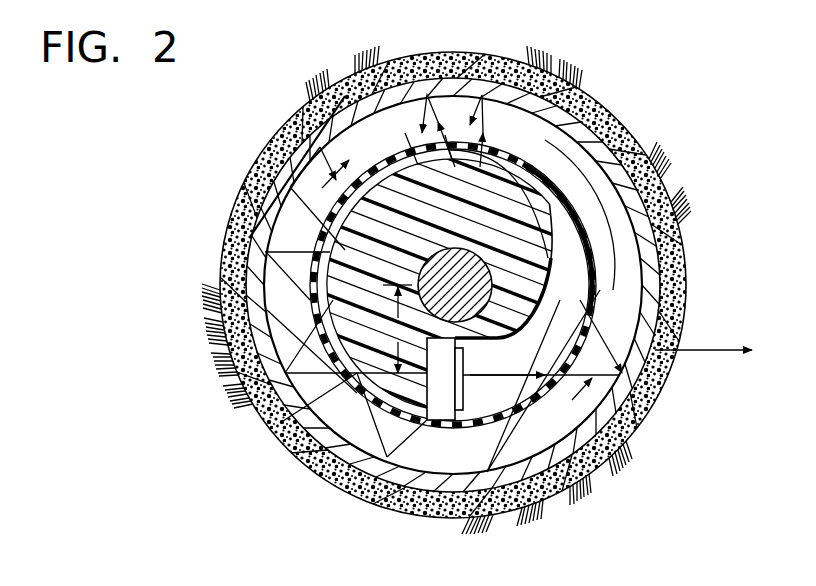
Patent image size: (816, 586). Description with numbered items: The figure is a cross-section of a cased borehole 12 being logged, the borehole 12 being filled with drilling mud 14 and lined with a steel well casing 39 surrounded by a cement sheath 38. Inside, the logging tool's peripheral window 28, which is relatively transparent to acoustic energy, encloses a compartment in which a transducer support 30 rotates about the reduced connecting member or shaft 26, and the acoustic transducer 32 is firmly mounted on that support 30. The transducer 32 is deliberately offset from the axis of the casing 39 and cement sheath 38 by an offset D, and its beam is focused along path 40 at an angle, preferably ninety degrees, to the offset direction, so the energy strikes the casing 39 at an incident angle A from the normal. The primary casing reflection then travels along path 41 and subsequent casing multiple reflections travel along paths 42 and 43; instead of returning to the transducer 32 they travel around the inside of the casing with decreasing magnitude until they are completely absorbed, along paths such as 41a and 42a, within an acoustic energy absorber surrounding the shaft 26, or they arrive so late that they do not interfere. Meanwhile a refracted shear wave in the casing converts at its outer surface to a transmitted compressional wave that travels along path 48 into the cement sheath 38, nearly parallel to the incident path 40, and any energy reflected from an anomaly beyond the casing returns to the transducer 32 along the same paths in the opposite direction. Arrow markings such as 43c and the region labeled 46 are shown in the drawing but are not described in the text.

The borehole 12 is at (242, 238).
The drilling mud 14 is at (277, 238).
The connecting member 26 is at (469, 291).
The peripheral window 28 is at (300, 447).
The transducer support 30 is at (458, 427).
The acoustic transducer 32 is at (460, 384).
The cement sheath 38 is at (262, 158).
The well casing 39 is at (315, 110).
The path 40 is at (488, 372).
The path 41 is at (598, 357).
The path 41a is at (556, 262).
The path 42 is at (548, 150).
The path 42a is at (490, 140).
The path 43 is at (512, 135).
The stream arrows 43c is at (418, 135).
The surrounding rock 46 is at (731, 189).
The path 48 is at (720, 350).
The offset D is at (397, 329).
The incident angle A is at (575, 400).